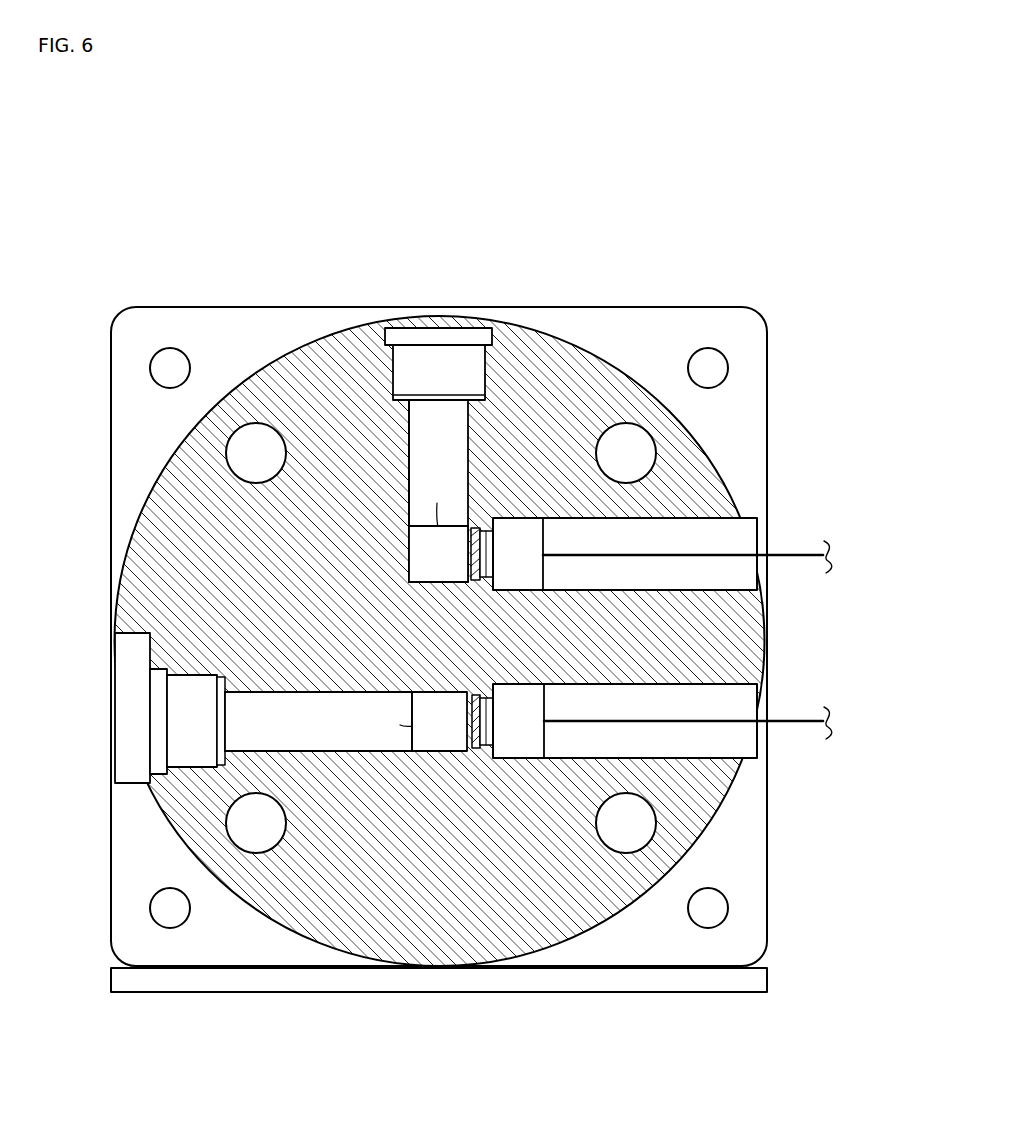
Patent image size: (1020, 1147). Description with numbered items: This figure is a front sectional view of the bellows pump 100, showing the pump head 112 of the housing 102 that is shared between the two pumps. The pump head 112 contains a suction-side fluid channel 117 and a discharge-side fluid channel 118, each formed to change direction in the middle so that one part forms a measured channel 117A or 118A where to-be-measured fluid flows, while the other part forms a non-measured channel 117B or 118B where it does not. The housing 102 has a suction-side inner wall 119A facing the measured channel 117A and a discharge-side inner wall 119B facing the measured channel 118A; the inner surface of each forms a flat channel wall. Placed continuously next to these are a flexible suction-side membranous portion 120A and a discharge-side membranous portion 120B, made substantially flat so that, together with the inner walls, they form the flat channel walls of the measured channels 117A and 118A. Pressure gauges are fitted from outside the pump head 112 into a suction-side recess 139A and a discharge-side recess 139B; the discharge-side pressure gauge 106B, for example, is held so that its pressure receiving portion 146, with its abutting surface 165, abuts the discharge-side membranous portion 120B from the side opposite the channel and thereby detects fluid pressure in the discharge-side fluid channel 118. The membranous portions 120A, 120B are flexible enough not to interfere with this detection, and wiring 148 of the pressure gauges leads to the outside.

The bellows pump 100 is at (439, 568).
The housing 102 is at (152, 1003).
The pump head 112 is at (277, 913).
The suction-side fluid channel 117 is at (157, 718).
The measured channel 117A is at (423, 742).
The non-measured channel 117B is at (275, 738).
The discharge-side fluid channel 118 is at (438, 333).
The measured channel 118A is at (418, 538).
The non-measured channel 118B is at (422, 437).
The suction-side inner wall 119A is at (474, 752).
The discharge-side inner wall 119B is at (468, 583).
The suction-side membranous portion 120A is at (328, 722).
The discharge-side membranous portion 120B is at (438, 491).
The pressure receiving portion 146 is at (471, 558).
The abutting surface 165 is at (460, 540).
The discharge-side pressure gauge 106B is at (537, 517).
The suction-side recess 139A is at (670, 757).
The discharge-side recess 139B is at (693, 532).
The wiring 148 is at (797, 552).